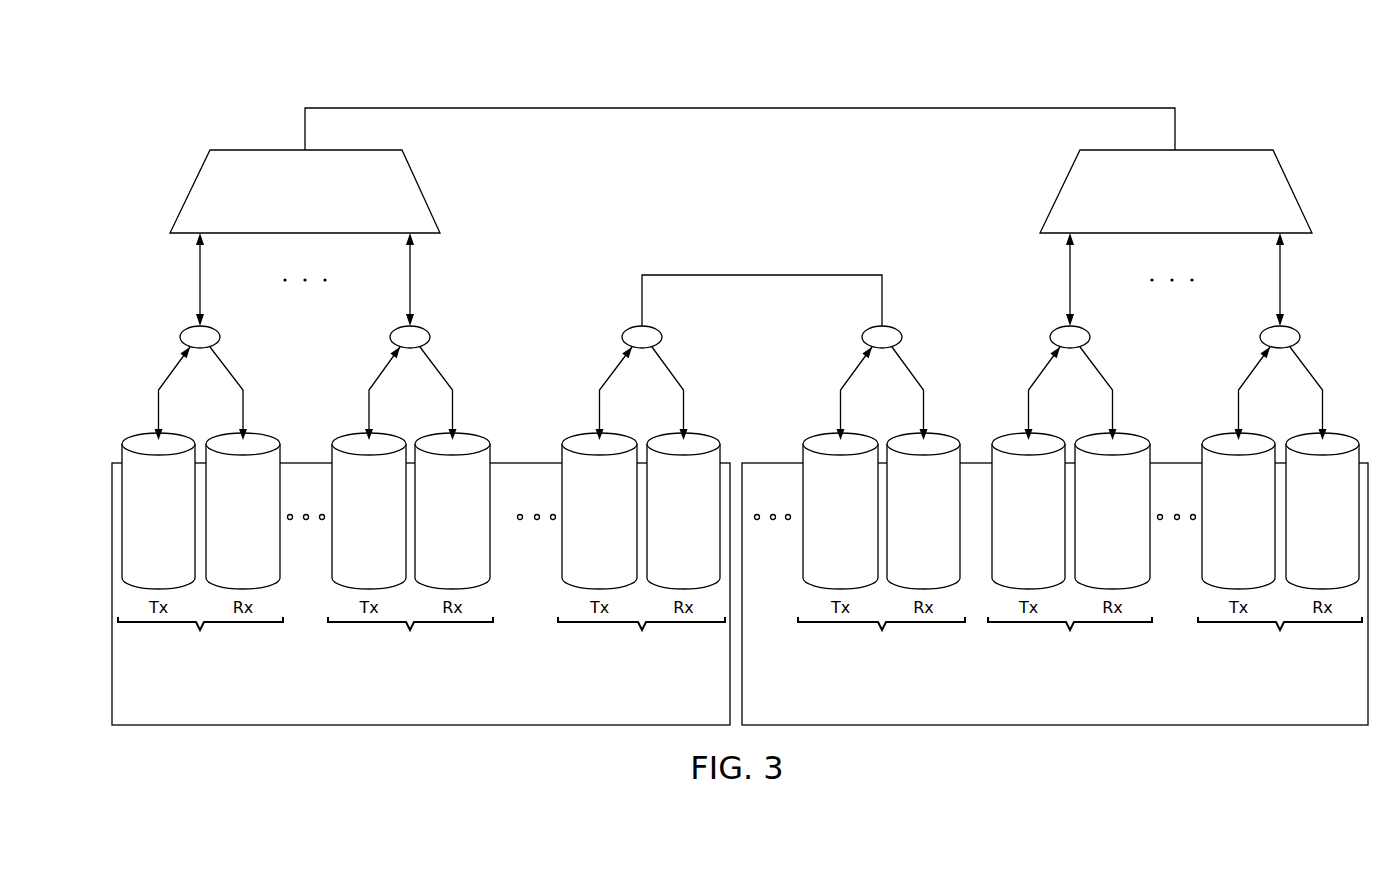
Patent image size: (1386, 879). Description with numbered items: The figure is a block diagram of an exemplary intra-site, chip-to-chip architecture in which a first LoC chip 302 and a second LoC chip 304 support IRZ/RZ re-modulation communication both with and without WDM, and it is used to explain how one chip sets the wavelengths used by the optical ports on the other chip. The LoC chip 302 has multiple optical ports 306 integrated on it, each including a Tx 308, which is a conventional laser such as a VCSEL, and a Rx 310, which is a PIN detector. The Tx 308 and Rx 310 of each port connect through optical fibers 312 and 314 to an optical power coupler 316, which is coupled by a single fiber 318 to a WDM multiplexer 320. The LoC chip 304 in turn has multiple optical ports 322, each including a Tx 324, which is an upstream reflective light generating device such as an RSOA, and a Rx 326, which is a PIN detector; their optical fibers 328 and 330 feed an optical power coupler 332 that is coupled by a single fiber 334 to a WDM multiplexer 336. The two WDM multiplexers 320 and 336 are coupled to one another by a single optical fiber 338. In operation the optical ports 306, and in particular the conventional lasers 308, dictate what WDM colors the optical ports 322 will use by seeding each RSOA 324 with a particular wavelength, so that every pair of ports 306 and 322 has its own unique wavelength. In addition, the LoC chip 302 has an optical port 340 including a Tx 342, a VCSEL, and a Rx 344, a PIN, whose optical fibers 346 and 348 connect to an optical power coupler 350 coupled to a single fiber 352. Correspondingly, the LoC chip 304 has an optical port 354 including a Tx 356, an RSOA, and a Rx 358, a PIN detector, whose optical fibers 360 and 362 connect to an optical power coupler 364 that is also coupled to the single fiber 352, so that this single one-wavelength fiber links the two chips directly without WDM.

The first LoC chip 302 is at (357, 737).
The second LoC chip 304 is at (1123, 737).
The optical port 306 is at (305, 640).
The Tx 308 is at (138, 548).
The Rx 310 is at (223, 548).
The optical fiber 312 is at (160, 410).
The optical fiber 314 is at (244, 400).
The optical power coupler 316 is at (181, 342).
The single fiber 318 is at (198, 283).
The WDM multiplexer 320 is at (191, 192).
The optical port 322 is at (1175, 640).
The Tx 324 is at (1008, 548).
The Rx 326 is at (1092, 548).
The optical fiber 328 is at (1029, 412).
The optical fiber 330 is at (1113, 400).
The optical power coupler 332 is at (1090, 342).
The single fiber 334 is at (1068, 283).
The WDM multiplexer 336 is at (1293, 192).
The single optical fiber 338 is at (742, 110).
The optical port 340 is at (641, 640).
The Tx 342 is at (579, 548).
The Rx 344 is at (663, 548).
The optical fiber 346 is at (599, 405).
The optical fiber 348 is at (683, 410).
The optical power coupler 350 is at (622, 342).
The single fiber 352 is at (762, 277).
The optical port 354 is at (881, 640).
The Tx 356 is at (820, 548).
The Rx 358 is at (903, 548).
The optical fiber 360 is at (841, 410).
The optical fiber 362 is at (924, 410).
The optical power coupler 364 is at (902, 342).